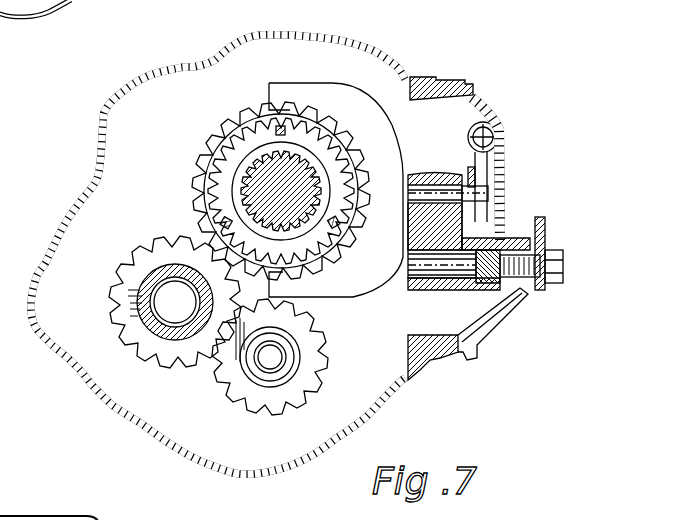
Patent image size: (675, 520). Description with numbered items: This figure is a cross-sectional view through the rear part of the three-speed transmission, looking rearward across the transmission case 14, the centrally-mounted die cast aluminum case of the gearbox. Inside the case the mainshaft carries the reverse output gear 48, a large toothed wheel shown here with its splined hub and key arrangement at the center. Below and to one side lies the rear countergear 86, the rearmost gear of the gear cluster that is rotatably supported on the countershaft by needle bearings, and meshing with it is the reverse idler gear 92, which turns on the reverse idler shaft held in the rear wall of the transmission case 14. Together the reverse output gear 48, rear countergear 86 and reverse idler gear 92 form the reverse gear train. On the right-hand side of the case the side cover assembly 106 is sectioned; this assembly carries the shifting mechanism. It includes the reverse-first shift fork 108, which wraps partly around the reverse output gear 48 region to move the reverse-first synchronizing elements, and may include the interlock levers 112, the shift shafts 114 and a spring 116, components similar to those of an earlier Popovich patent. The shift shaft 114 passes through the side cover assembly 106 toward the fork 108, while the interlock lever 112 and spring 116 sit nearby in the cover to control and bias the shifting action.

The transmission case 14 is at (297, 34).
The reverse output gear 48 is at (205, 147).
The rear countergear 86 is at (180, 363).
The reverse idler gear 92 is at (267, 403).
The side cover assembly 106 is at (508, 167).
The reverse-first shift fork 108 is at (347, 107).
The interlock lever 112 is at (480, 150).
The shift shaft 114 is at (400, 270).
The spring 116 is at (468, 135).